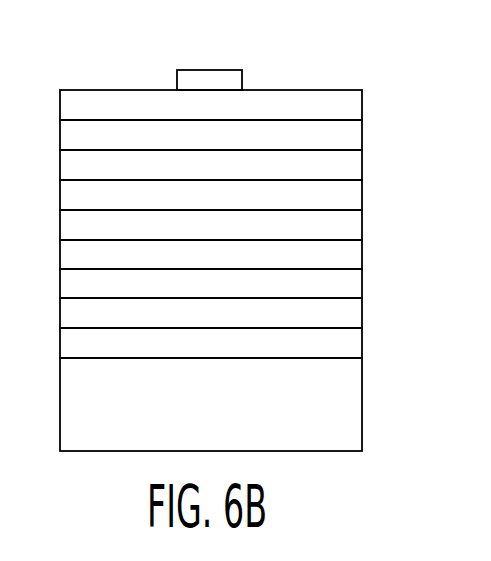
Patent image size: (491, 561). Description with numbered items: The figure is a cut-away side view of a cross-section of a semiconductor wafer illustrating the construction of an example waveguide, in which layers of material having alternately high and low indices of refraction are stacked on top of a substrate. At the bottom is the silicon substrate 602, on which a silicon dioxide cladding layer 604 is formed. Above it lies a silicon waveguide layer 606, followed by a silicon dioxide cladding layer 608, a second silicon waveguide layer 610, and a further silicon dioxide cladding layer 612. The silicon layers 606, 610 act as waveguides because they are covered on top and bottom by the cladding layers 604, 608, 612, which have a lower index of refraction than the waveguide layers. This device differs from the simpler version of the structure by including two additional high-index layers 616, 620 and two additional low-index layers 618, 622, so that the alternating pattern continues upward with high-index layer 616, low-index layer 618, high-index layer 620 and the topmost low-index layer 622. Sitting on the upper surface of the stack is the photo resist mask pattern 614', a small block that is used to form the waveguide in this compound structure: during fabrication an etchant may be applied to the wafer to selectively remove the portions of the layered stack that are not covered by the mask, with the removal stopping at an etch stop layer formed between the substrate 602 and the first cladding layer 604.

The photo resist mask pattern 614' is at (232, 53).
The low-index layer 622 is at (355, 107).
The high-index layer 620 is at (357, 133).
The low-index layer 618 is at (357, 168).
The high-index layer 616 is at (355, 195).
The cladding layer 612 is at (355, 222).
The waveguide layer 610 is at (355, 255).
The cladding layer 608 is at (355, 287).
The waveguide layer 606 is at (355, 314).
The cladding layer 604 is at (355, 345).
The silicon substrate 602 is at (355, 412).